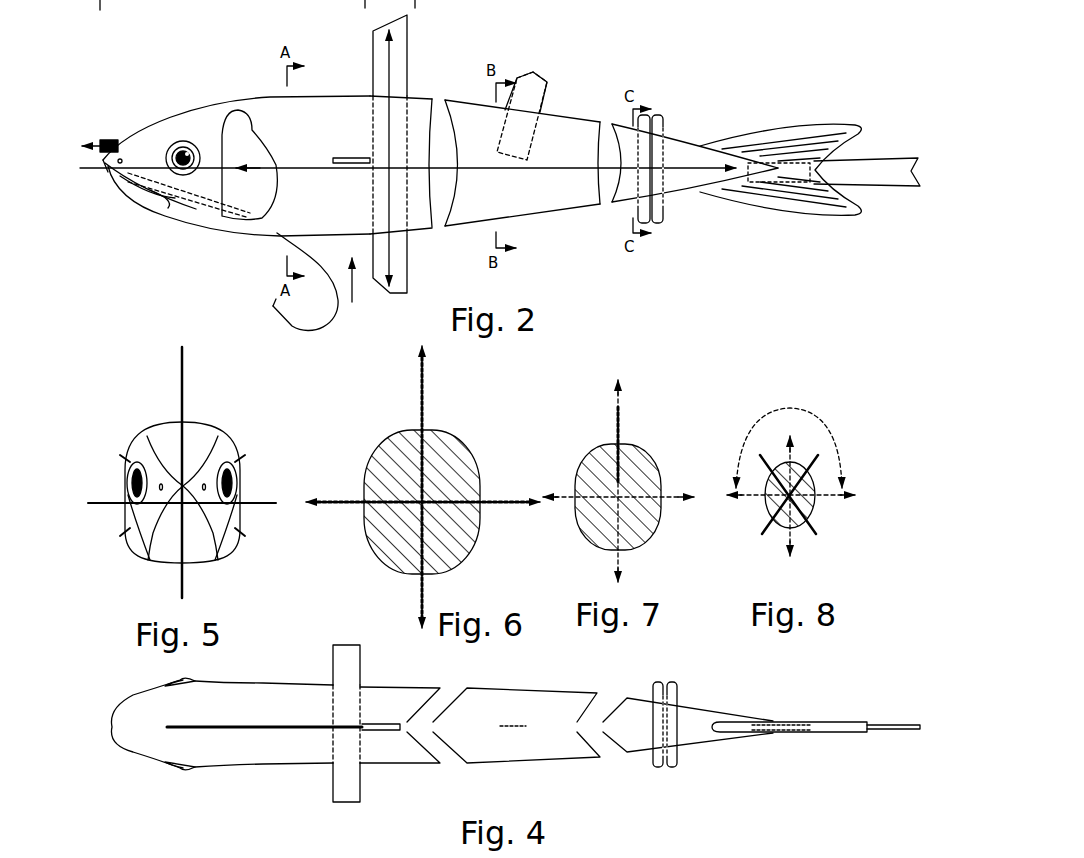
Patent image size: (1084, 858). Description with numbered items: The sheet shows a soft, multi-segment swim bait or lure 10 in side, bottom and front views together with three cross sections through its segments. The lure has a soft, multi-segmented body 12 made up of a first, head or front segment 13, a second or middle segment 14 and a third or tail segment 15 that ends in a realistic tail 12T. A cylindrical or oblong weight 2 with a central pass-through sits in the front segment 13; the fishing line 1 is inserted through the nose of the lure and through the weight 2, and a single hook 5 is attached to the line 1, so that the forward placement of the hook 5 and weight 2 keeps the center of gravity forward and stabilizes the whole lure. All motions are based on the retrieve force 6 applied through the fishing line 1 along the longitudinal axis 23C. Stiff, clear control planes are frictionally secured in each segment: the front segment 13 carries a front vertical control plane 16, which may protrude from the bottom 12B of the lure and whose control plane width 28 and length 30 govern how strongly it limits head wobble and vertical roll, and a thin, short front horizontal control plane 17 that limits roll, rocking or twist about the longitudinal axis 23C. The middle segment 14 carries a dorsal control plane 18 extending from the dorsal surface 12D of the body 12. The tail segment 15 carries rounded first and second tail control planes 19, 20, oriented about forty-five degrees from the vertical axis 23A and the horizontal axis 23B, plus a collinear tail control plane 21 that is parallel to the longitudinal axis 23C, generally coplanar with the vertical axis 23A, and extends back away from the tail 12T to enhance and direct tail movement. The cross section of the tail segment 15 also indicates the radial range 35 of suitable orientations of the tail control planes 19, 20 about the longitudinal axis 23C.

In FIG. 2, the fishing line 1 is at (100, 172).
In FIG. 2, the weight 2 is at (157, 192).
In FIG. 2, the single hook 5 is at (280, 238).
In FIG. 2, the retrieve force 6 is at (114, 138).
In FIG. 2, the lure 10 is at (128, 96).
In FIG. 5, the lure 10 is at (126, 565).
In FIG. 4, the lure 10 is at (124, 692).
In FIG. 2, the body 12 is at (216, 222).
In FIG. 5, the body 12 is at (156, 430).
In FIG. 4, the body 12 is at (162, 754).
In FIG. 2, the bottom 12B is at (356, 292).
In FIG. 2, the dorsal surface 12D is at (556, 104).
In FIG. 7, the dorsal surface 12D is at (636, 424).
In FIG. 2, the tail 12T is at (805, 134).
In FIG. 4, the tail 12T is at (828, 702).
In FIG. 2, the first body segment 13 is at (330, 108).
In FIG. 6, the first body segment 13 is at (450, 456).
In FIG. 4, the first body segment 13 is at (392, 692).
In FIG. 2, the second body segment 14 is at (560, 140).
In FIG. 7, the second body segment 14 is at (642, 460).
In FIG. 4, the second body segment 14 is at (562, 712).
In FIG. 2, the third body segment 15 is at (676, 158).
In FIG. 8, the third body segment 15 is at (806, 507).
In FIG. 4, the third body segment 15 is at (690, 722).
In FIG. 2, the front vertical control plane 16 is at (407, 32).
In FIG. 5, the front vertical control plane 16 is at (186, 366).
In FIG. 6, the front vertical control plane 16 is at (425, 384).
In FIG. 4, the front vertical control plane 16 is at (378, 732).
In FIG. 2, the front horizontal control plane 17 is at (348, 158).
In FIG. 5, the front horizontal control plane 17 is at (105, 502).
In FIG. 6, the front horizontal control plane 17 is at (356, 500).
In FIG. 4, the front horizontal control plane 17 is at (336, 659).
In FIG. 2, the dorsal control plane 18 is at (512, 128).
In FIG. 7, the dorsal control plane 18 is at (614, 420).
In FIG. 2, the first tail control plane 19 is at (640, 216).
In FIG. 5, the first tail control plane 19 is at (241, 458).
In FIG. 8, the first tail control plane 19 is at (814, 527).
In FIG. 4, the first tail control plane 19 is at (655, 683).
In FIG. 2, the second tail control plane 20 is at (664, 216).
In FIG. 5, the second tail control plane 20 is at (238, 536).
In FIG. 8, the second tail control plane 20 is at (764, 532).
In FIG. 4, the second tail control plane 20 is at (672, 758).
In FIG. 2, the tail control plane 21 is at (890, 163).
In FIG. 4, the tail control plane 21 is at (888, 724).
In FIG. 6, the vertical axis 23A is at (420, 374).
In FIG. 7, the vertical axis 23A is at (616, 398).
In FIG. 8, the vertical axis 23A is at (798, 541).
In FIG. 6, the horizontal axis 23B is at (335, 505).
In FIG. 7, the horizontal axis 23B is at (572, 502).
In FIG. 8, the horizontal axis 23B is at (750, 502).
In FIG. 2, the longitudinal axis 23C is at (542, 172).
In FIG. 2, the control plane width 28 is at (362, 3).
In FIG. 2, the control plane length 30 is at (392, 62).
In FIG. 8, the radial range 35 is at (800, 408).